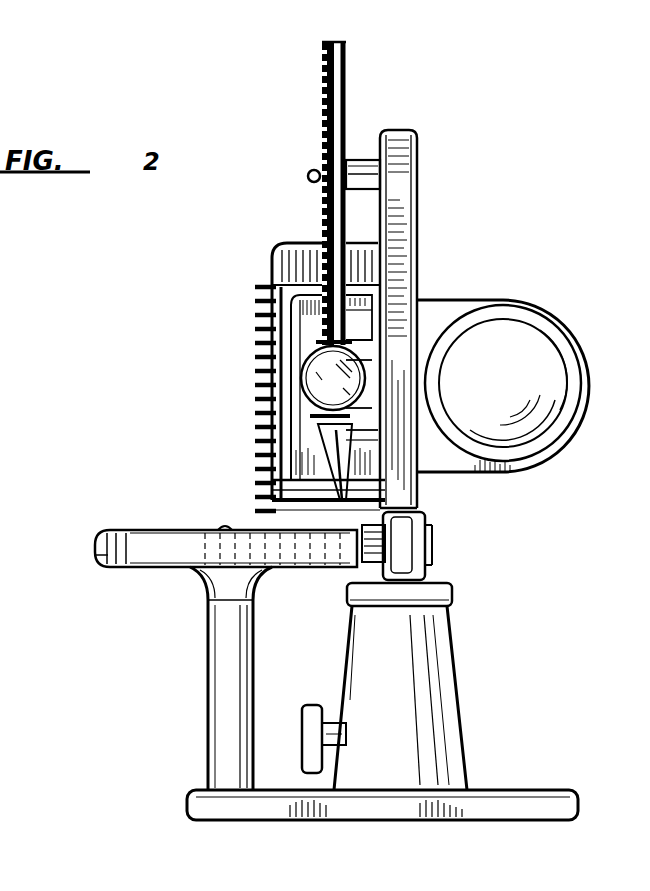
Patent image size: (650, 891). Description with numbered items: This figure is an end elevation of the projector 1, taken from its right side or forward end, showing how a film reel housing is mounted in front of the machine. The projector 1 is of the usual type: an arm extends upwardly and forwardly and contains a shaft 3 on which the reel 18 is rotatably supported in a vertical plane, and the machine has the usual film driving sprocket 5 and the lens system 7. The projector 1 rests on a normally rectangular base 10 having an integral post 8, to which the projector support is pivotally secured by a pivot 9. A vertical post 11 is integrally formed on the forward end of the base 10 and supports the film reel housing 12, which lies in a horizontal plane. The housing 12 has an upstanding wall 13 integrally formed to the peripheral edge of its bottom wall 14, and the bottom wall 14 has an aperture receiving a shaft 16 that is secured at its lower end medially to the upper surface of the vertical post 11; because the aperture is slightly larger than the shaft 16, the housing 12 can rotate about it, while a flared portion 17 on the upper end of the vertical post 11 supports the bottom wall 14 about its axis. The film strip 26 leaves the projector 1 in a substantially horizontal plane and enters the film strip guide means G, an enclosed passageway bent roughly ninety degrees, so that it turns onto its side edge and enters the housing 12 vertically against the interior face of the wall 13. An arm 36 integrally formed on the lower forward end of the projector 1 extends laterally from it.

The projector 1 is at (242, 356).
The shaft 3 is at (308, 176).
The film driving sprocket 5 is at (262, 300).
The lens system 7 is at (262, 386).
The post 8 is at (390, 694).
The pivot 9 is at (358, 560).
The base 10 is at (360, 805).
The vertical post 11 is at (222, 652).
The film reel housing 12 is at (92, 552).
The upstanding wall 13 is at (113, 528).
The bottom wall 14 is at (113, 568).
The shaft 16 is at (225, 526).
The flared portion 17 is at (216, 585).
The reel 18 is at (330, 82).
The film strip 26 is at (322, 124).
The arm 36 is at (302, 498).
The film strip guide means G is at (305, 444).